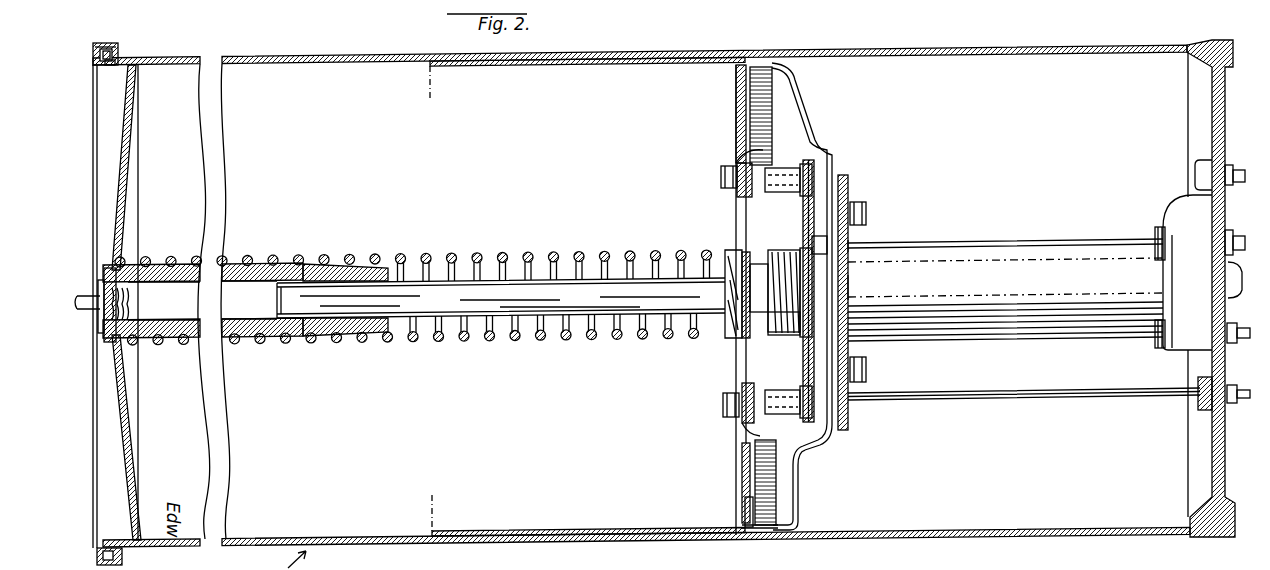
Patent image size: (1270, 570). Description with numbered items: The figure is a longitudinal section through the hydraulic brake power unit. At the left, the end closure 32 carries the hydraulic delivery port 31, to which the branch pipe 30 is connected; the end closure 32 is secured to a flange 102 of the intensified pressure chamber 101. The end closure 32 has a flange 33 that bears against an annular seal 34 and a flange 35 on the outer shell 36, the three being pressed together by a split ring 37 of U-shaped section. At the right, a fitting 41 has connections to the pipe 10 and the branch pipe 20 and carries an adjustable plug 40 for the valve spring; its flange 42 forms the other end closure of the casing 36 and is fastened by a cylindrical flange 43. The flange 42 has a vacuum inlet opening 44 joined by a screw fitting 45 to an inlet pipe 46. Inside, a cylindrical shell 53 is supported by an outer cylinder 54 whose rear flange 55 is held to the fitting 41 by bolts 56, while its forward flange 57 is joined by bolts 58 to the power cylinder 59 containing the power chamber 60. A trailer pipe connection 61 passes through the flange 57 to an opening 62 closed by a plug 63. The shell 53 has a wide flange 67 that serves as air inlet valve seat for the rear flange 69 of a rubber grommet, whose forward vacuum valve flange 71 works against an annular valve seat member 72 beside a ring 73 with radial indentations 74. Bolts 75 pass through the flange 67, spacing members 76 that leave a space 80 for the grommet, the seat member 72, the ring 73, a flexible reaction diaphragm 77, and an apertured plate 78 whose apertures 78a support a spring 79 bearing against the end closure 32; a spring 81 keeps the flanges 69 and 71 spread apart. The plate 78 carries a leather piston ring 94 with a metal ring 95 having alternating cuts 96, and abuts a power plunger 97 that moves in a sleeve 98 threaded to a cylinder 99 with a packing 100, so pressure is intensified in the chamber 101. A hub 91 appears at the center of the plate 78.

The pipe 10 is at (1240, 340).
The branch pipe 20 is at (1241, 229).
The branch pipe 30 is at (86, 296).
The hydraulic delivery port 31 is at (128, 300).
The end closure 32 is at (126, 165).
The flange 33 is at (96, 64).
The annular seal 34 is at (108, 66).
The flange 35 is at (117, 54).
The outer shell 36 is at (246, 56).
The split ring 37 is at (105, 45).
The adjustable plug 40 is at (1239, 264).
The fitting 41 is at (1225, 282).
The flange 42 is at (1222, 456).
The cylindrical flange 43 is at (1200, 517).
The vacuum inlet opening 44 is at (1196, 173).
The screw fitting 45 is at (1236, 165).
The inlet pipe 46 is at (1232, 184).
The cylindrical shell 53 is at (838, 262).
The outer cylinder 54 is at (978, 244).
The rear flange 55 is at (1165, 277).
The bolts 56 is at (1155, 232).
The flange 57 is at (840, 287).
The bolts 58 is at (860, 208).
The power cylinder 59 is at (540, 66).
The power chamber 60 is at (790, 112).
The trailer pipe connection 61 is at (975, 398).
The opening 62 is at (1192, 392).
The plug 63 is at (1236, 403).
The wide flange 67 is at (836, 190).
The rear flange 69 is at (802, 286).
The vacuum valve flange 71 is at (762, 288).
The annular valve seat member 72 is at (806, 247).
The ring 73 is at (758, 130).
The radial indentations 74 is at (760, 202).
The bolts 75 is at (721, 177).
The spacing members 76 is at (787, 170).
The flexible reaction diaphragm 77 is at (737, 279).
The apertured plate 78 is at (735, 96).
The apertures 78a is at (740, 150).
The spring 79 is at (546, 342).
The space 80 is at (823, 235).
The spring 81 is at (772, 333).
The hub 91 is at (745, 332).
The leather piston ring 94 is at (760, 528).
The metal ring 95 is at (742, 505).
The alternating cuts 96 is at (762, 490).
The power plunger 97 is at (481, 286).
The sleeve 98 is at (348, 336).
The cylinder 99 is at (218, 340).
The packing 100 is at (313, 266).
The intensified pressure chamber 101 is at (229, 292).
The flange 102 is at (106, 338).